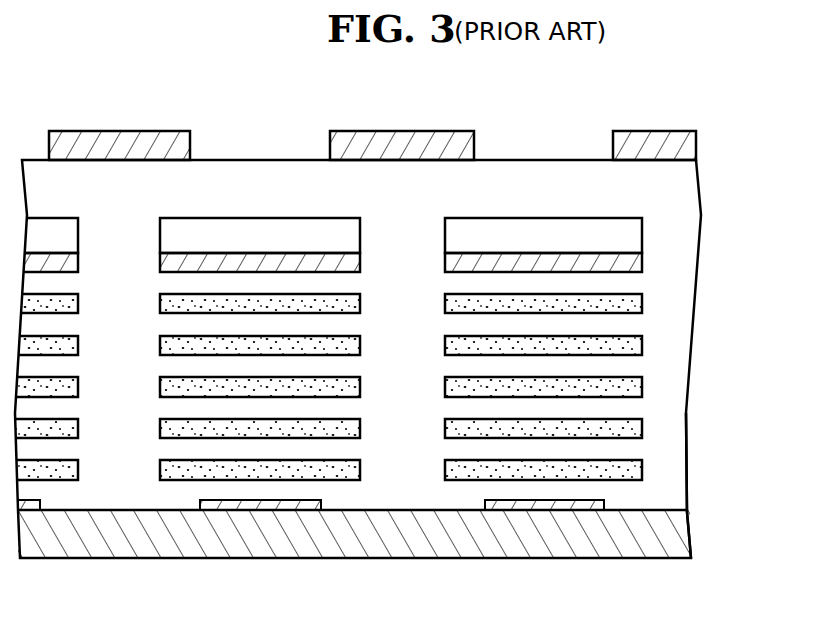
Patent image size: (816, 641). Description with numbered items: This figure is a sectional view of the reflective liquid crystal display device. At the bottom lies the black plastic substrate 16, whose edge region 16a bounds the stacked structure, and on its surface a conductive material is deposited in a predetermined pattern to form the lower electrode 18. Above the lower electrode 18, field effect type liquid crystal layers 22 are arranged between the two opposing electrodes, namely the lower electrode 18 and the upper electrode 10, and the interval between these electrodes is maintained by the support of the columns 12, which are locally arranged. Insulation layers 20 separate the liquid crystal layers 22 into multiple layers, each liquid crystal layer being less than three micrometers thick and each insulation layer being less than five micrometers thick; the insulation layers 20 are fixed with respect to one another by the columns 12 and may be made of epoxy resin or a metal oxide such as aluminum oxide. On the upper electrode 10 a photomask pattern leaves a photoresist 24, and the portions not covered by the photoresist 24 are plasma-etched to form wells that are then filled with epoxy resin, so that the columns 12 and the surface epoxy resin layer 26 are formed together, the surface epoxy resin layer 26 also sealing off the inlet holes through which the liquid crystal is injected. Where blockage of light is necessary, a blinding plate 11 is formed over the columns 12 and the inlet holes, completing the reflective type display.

The upper electrode 10 is at (253, 253).
The blinding plate 11 is at (190, 133).
The column 12 is at (106, 198).
The black plastic substrate 16 is at (643, 550).
The substrate edge 16a is at (676, 515).
The lower electrode 18 is at (240, 510).
The insulation layer 20 is at (631, 368).
The liquid crystal layer 22 is at (632, 347).
The photoresist 24 is at (631, 240).
The surface epoxy resin layer 26 is at (688, 183).